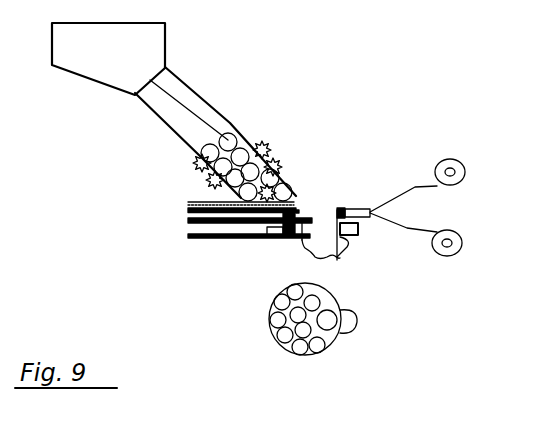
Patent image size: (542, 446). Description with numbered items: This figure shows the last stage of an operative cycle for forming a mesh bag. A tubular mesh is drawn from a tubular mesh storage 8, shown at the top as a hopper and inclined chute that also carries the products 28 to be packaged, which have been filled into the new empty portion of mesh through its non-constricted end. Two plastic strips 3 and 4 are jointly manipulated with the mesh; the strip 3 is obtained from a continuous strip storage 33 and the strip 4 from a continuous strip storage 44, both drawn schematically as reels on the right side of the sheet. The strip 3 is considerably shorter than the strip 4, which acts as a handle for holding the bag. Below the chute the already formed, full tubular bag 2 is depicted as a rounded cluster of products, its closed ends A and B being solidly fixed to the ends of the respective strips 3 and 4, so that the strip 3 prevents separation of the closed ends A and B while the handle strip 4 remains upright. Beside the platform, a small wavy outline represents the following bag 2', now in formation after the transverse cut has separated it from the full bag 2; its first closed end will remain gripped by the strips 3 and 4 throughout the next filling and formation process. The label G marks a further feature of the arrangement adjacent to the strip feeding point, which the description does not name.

The products 28 is at (228, 143).
The tubular mesh storage 8 is at (257, 143).
The following bag 2' is at (290, 259).
The gap element G is at (340, 258).
The plastic strip 3 is at (414, 188).
The continuous strip storage 33 is at (456, 158).
The plastic strip 4 is at (407, 228).
The continuous strip storage 44 is at (447, 256).
The tubular bag 2 is at (292, 344).
The first closed end A is at (342, 333).
The second closed end B is at (333, 305).